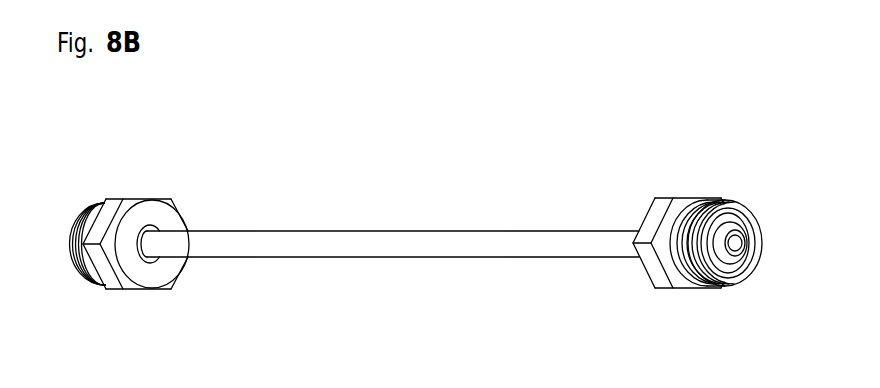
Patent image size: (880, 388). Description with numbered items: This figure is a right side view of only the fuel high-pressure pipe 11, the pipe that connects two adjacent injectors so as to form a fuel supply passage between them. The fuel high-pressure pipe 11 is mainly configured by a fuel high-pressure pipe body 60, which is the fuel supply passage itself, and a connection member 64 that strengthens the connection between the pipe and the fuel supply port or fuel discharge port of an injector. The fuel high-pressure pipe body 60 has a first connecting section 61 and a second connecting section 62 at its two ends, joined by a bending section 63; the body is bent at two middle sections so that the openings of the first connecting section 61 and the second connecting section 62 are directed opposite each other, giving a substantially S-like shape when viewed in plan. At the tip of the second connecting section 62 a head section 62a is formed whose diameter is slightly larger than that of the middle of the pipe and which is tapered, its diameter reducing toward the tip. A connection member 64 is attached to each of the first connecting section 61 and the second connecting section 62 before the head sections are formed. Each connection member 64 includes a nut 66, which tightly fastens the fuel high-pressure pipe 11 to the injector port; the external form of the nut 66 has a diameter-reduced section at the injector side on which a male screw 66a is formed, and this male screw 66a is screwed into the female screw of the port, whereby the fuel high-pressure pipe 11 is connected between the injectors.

The fuel high-pressure pipe 11 is at (420, 221).
The fuel high-pressure pipe body 60 is at (457, 258).
The first connecting section 61 is at (190, 231).
The bending section 63 is at (412, 231).
The connection member 64 is at (103, 155).
The second connecting section 62 is at (629, 232).
The head section 62a is at (738, 222).
The nut 66 is at (150, 199).
The male screw 66a is at (88, 208).